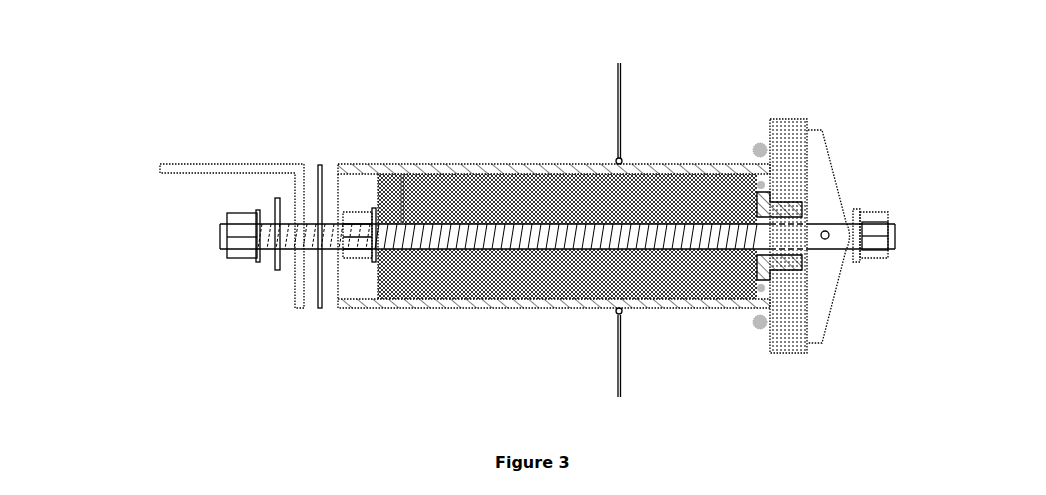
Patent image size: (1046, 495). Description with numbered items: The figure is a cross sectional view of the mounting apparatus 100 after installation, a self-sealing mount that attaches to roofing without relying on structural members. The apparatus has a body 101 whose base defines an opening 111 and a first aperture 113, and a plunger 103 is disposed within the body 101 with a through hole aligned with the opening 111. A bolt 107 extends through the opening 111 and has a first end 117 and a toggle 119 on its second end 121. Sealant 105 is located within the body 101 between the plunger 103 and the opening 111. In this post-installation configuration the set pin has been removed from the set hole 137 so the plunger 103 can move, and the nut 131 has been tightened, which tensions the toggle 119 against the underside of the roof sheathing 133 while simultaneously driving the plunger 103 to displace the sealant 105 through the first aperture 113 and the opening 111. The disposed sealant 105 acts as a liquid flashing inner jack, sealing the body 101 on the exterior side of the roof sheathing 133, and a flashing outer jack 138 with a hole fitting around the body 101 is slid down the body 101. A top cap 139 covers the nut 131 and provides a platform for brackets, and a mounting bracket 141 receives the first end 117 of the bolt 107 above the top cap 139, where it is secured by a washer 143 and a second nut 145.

The mounting apparatus 100 is at (284, 61).
The body 101 is at (455, 163).
The plunger 103 is at (522, 183).
The sealant 105 is at (756, 146).
The bolt 107 is at (567, 240).
The opening 111 is at (757, 253).
The first aperture 113 is at (757, 176).
The first end 117 is at (241, 268).
The toggle 119 is at (832, 170).
The second end 121 is at (848, 248).
The nut 131 is at (363, 258).
The roof sheathing 133 is at (790, 118).
The set hole 137 is at (402, 171).
The flashing outer jack 138 is at (615, 330).
The top cap 139 is at (320, 305).
The mounting bracket 141 is at (248, 167).
The washer 143 is at (277, 268).
The second nut 145 is at (228, 258).